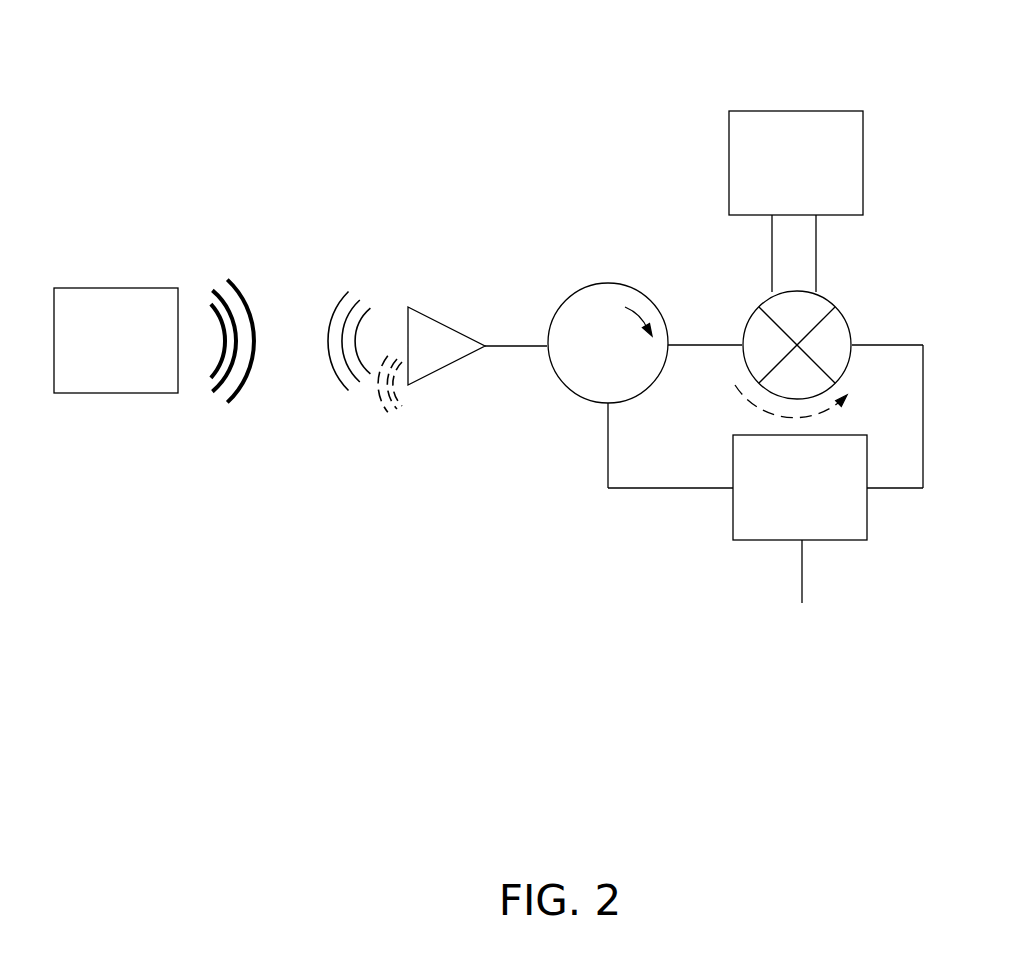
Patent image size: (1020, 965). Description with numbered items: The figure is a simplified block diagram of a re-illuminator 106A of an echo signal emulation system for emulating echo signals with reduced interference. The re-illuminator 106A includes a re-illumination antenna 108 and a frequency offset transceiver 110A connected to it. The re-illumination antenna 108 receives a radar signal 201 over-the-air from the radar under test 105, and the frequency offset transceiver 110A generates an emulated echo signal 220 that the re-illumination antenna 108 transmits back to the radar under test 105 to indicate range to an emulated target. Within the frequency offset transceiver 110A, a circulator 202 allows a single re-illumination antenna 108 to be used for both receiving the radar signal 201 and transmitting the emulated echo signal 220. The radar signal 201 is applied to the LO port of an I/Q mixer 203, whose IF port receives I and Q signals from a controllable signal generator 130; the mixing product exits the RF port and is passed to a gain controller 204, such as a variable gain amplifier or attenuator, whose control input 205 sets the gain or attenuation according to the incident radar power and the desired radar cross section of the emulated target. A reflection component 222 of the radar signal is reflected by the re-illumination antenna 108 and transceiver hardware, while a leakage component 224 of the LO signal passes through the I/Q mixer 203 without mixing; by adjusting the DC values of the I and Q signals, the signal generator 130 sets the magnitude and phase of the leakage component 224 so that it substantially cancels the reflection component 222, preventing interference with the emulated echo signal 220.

The re-illuminator 106A is at (673, 28).
The frequency offset transceiver 110A is at (677, 367).
The radar under test 105 is at (131, 306).
The radar signal 201 is at (269, 306).
The emulated echo signal 220 is at (309, 372).
The reflection component 222 is at (348, 428).
The re-illumination antenna 108 is at (462, 319).
The circulator 202 is at (628, 312).
The I/Q mixer 203 is at (832, 325).
The signal generator 130 is at (837, 139).
The leakage component 224 is at (771, 428).
The gain controller 204 is at (762, 514).
The control input 205 is at (762, 605).